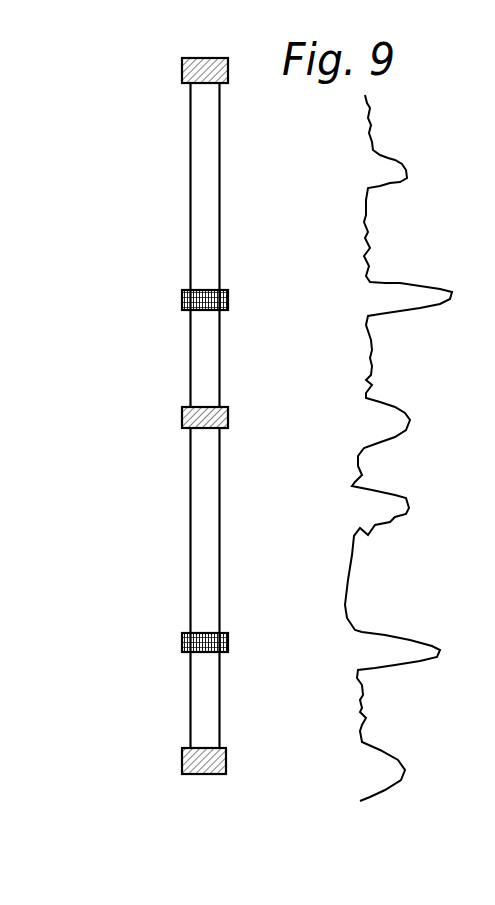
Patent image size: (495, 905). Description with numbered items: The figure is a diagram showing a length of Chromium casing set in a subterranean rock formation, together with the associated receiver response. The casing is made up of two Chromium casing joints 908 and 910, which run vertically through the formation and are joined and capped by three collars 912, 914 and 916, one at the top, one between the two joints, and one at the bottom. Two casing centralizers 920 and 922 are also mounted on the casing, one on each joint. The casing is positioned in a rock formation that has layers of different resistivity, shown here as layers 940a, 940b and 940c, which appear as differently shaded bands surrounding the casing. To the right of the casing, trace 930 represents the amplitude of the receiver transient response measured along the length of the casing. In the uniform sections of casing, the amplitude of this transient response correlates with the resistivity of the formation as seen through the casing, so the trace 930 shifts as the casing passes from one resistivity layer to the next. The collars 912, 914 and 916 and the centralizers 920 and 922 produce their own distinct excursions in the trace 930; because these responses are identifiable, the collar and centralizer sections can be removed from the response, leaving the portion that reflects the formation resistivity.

The Chromium casing joint 908 is at (197, 260).
The Chromium casing joint 910 is at (198, 568).
The collar 912 is at (193, 75).
The collar 914 is at (188, 417).
The collar 916 is at (185, 765).
The casing centralizer 920 is at (188, 300).
The casing centralizer 922 is at (188, 642).
The trace 930 is at (368, 235).
The resistivity layer 940a is at (168, 124).
The resistivity layer 940b is at (157, 172).
The resistivity layer 940c is at (168, 226).